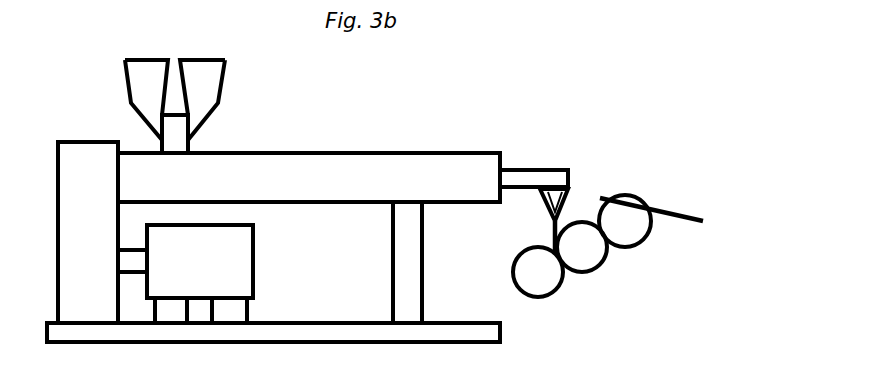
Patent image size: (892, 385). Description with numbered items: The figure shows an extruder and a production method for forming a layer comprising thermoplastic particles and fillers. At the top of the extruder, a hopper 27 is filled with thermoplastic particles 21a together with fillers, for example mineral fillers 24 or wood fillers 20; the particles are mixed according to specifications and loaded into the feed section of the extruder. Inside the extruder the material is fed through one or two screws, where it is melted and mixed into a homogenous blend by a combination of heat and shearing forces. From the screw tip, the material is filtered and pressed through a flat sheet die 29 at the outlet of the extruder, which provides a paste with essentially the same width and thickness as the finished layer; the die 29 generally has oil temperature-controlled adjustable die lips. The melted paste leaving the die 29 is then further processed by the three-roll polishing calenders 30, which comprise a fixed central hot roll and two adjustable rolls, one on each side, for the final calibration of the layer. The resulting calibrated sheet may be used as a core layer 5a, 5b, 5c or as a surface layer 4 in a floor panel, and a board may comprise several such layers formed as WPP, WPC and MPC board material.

The wood fillers 20 is at (139, 110).
The hopper 27 is at (170, 102).
The mineral fillers 24 is at (137, 89).
The thermoplastic particles 21a is at (213, 70).
The flat sheet die 29 is at (572, 197).
The 3-roll polishing calenders 30 is at (608, 273).
The core layer 5a is at (660, 201).
The core layer 5b is at (660, 201).
The core layer 5c is at (660, 201).
The surface layer 4 is at (707, 218).